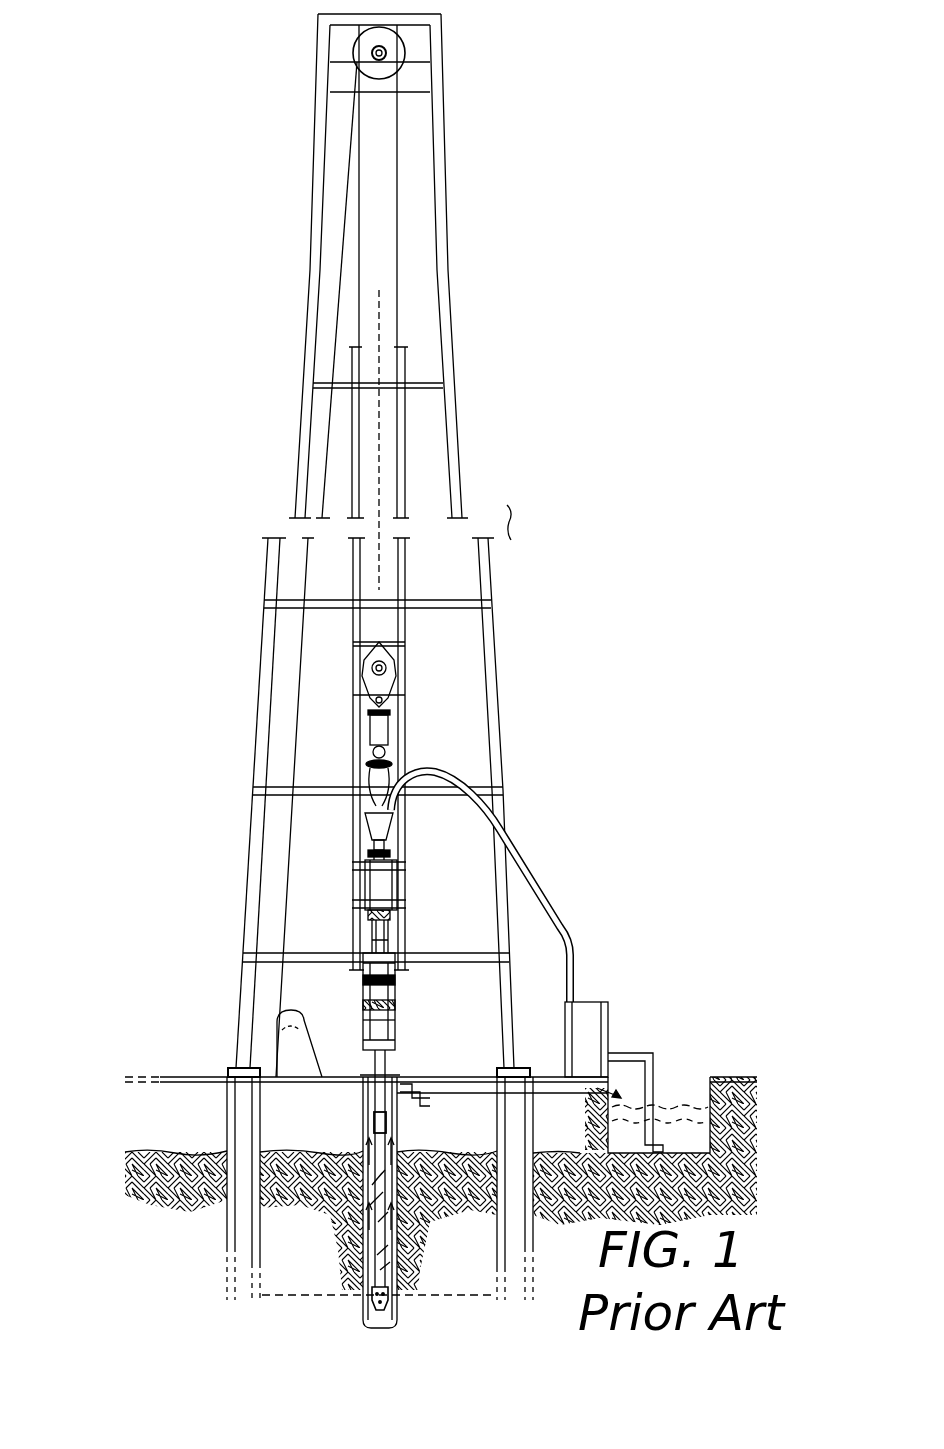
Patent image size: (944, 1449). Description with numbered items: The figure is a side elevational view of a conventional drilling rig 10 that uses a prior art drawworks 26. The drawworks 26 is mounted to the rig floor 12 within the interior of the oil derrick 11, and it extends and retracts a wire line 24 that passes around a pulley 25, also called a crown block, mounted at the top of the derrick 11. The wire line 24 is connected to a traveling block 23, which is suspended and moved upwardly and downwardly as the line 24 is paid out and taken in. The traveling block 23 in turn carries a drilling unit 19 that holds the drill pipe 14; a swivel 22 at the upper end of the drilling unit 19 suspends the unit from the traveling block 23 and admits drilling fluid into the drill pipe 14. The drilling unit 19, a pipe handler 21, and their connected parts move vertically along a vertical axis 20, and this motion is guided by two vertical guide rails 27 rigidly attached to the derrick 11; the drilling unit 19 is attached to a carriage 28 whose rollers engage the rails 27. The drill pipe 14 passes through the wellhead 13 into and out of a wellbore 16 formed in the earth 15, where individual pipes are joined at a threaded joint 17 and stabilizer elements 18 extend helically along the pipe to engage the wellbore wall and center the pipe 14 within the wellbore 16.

The drilling rig 10 is at (510, 353).
The oil derrick 11 is at (458, 470).
The rig floor 12 is at (538, 1075).
The wellhead 13 is at (398, 1080).
The drill pipe 14 is at (362, 1083).
The earth 15 is at (492, 1150).
The wellbore 16 is at (366, 1254).
The threaded joint 17 is at (392, 1118).
The stabilizer elements 18 is at (395, 1225).
The drilling unit 19 is at (436, 822).
The vertical axis 20 is at (378, 460).
The pipe handler 21 is at (404, 1001).
The swivel 22 is at (383, 822).
The traveling block 23 is at (388, 680).
The wire line 24 is at (398, 218).
The pulley 25 is at (393, 62).
The drawworks 26 is at (292, 1058).
The guide rails 27 is at (410, 545).
The carriage 28 is at (365, 880).